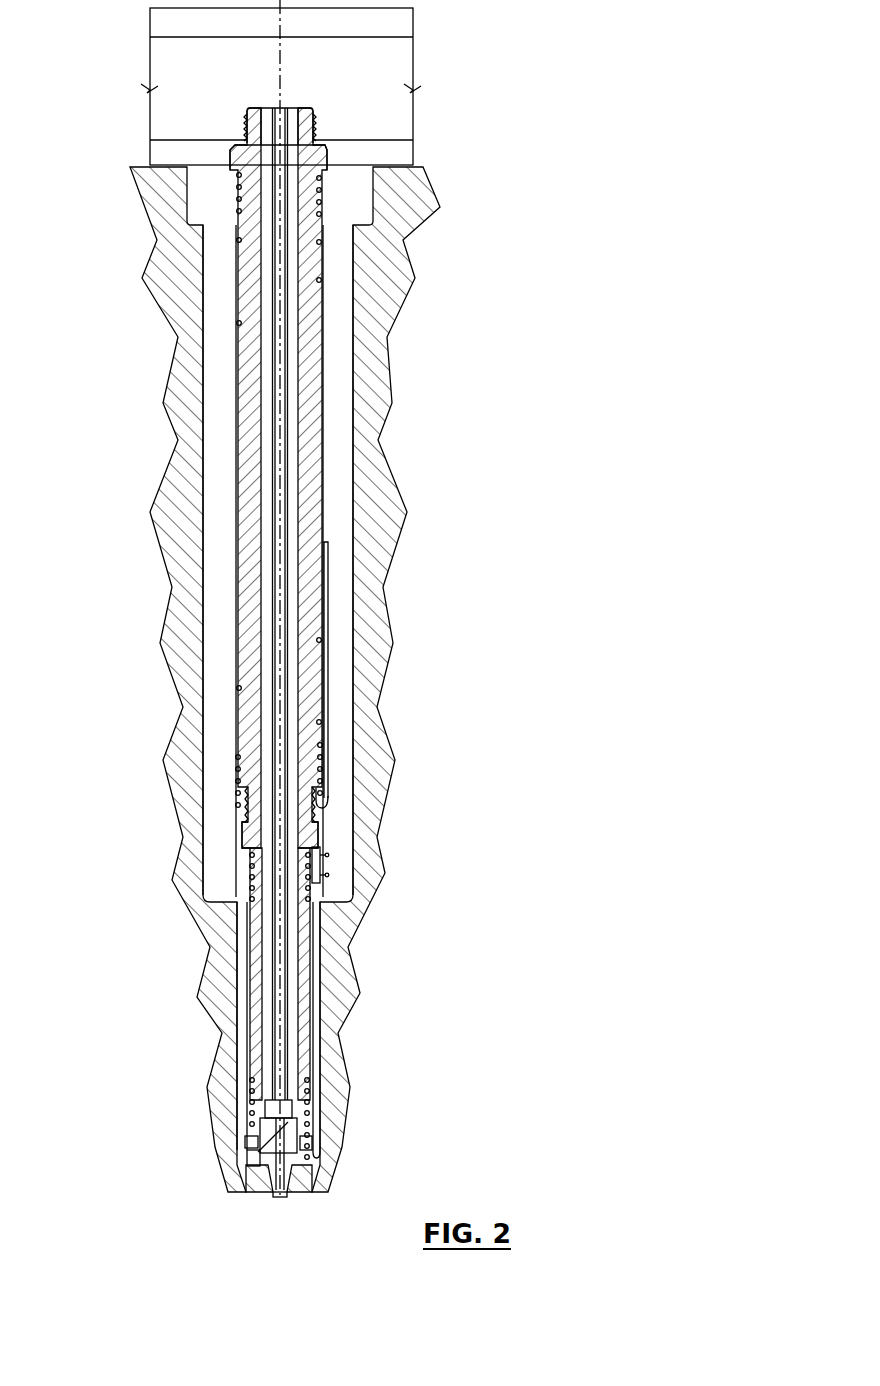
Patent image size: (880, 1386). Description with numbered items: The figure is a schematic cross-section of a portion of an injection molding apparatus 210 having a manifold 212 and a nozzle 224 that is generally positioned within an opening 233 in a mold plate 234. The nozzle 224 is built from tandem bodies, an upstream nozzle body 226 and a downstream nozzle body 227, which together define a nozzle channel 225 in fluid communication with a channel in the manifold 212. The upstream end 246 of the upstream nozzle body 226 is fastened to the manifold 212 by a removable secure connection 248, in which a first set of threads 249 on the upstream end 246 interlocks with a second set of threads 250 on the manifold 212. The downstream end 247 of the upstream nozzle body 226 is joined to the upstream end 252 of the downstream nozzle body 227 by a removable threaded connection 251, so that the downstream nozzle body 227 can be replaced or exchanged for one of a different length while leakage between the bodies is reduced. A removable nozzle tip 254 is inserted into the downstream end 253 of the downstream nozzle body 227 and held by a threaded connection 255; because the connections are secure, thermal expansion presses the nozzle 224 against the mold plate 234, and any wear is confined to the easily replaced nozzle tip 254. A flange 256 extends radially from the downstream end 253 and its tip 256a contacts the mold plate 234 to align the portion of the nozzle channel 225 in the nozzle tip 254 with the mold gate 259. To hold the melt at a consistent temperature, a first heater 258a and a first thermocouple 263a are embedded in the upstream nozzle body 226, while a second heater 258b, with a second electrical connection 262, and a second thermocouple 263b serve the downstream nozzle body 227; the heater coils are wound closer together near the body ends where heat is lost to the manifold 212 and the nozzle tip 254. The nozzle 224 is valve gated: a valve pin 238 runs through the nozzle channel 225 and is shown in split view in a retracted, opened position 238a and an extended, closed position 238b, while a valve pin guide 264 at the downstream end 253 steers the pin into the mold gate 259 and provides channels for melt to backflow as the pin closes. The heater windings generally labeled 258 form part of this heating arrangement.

The injection molding apparatus 210 is at (481, 158).
The manifold 212 is at (392, 26).
The nozzle 224 is at (337, 653).
The nozzle channel 225 is at (292, 302).
The upstream nozzle body 226 is at (250, 455).
The downstream nozzle body 227 is at (250, 995).
The opening 233 is at (217, 575).
The mold plate 234 is at (197, 286).
The valve pin 238 is at (285, 520).
The retracted position 238a is at (317, 1022).
The extended position 238b is at (278, 1060).
The upstream end 246 is at (240, 160).
The downstream end 247 is at (322, 768).
The removable secure connection 248 is at (250, 116).
The first set of threads 249 is at (283, 132).
The second set of threads 250 is at (247, 130).
The threaded connection 251 is at (243, 828).
The upstream end 252 is at (318, 841).
The downstream end 253 is at (265, 1182).
The nozzle tip 254 is at (313, 1173).
The threaded connection 255 is at (300, 1157).
The flange 256 is at (257, 1163).
The tip 256a is at (262, 1147).
The threads 258 is at (246, 788).
The first heater 258a is at (322, 195).
The second heater 258b is at (309, 918).
The mold gate 259 is at (283, 1195).
The second electrical connection 262 is at (322, 866).
The first thermocouple 263a is at (323, 803).
The second thermocouple 263b is at (310, 1133).
The valve pin guide 264 is at (268, 1117).